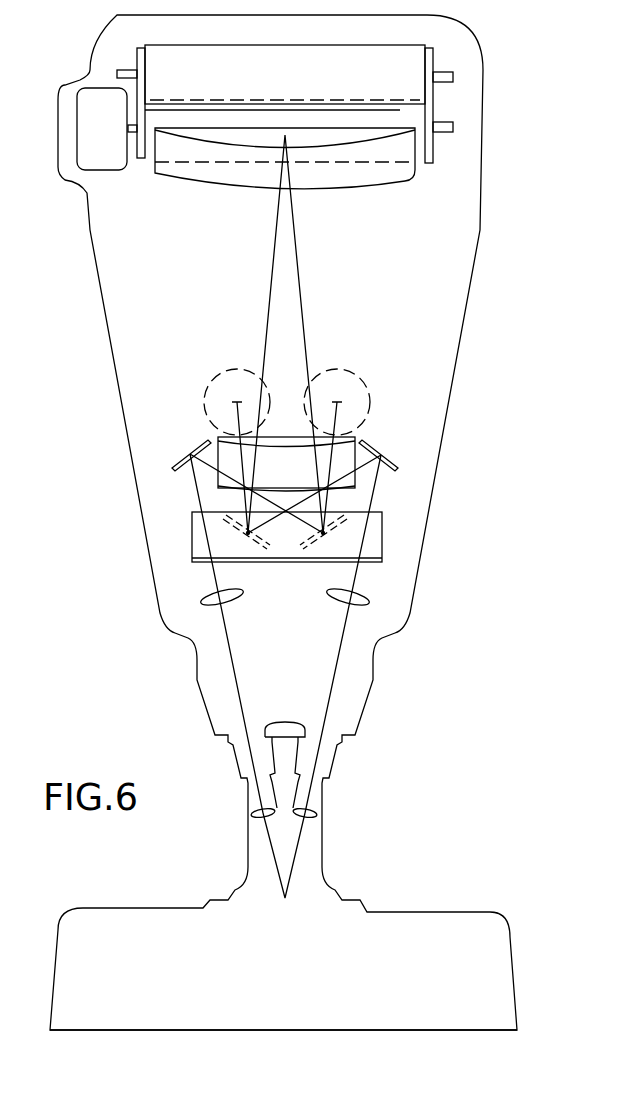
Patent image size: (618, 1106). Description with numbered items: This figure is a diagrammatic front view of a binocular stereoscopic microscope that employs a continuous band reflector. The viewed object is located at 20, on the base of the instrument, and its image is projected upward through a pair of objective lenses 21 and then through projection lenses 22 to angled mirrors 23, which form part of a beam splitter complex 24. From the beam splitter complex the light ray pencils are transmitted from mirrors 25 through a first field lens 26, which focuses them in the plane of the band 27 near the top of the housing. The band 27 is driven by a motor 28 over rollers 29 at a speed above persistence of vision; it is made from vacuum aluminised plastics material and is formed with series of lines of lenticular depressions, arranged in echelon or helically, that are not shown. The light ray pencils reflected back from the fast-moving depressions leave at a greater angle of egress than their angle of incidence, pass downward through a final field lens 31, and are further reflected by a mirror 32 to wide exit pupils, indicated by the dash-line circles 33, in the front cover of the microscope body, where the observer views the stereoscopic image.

The viewed object 20 is at (283, 968).
The objective lenses 21 is at (352, 823).
The projection lenses 22 is at (410, 640).
The angled mirrors 23 is at (470, 472).
The beam splitter complex 24 is at (298, 605).
The mirrors 25 is at (450, 543).
The first field lens 26 is at (388, 180).
The band 27 is at (157, 62).
The motor 28 is at (87, 153).
The rollers 29 is at (430, 88).
The final field lens 31 is at (355, 447).
The mirror 32 is at (375, 553).
The exit pupils 33 is at (357, 373).